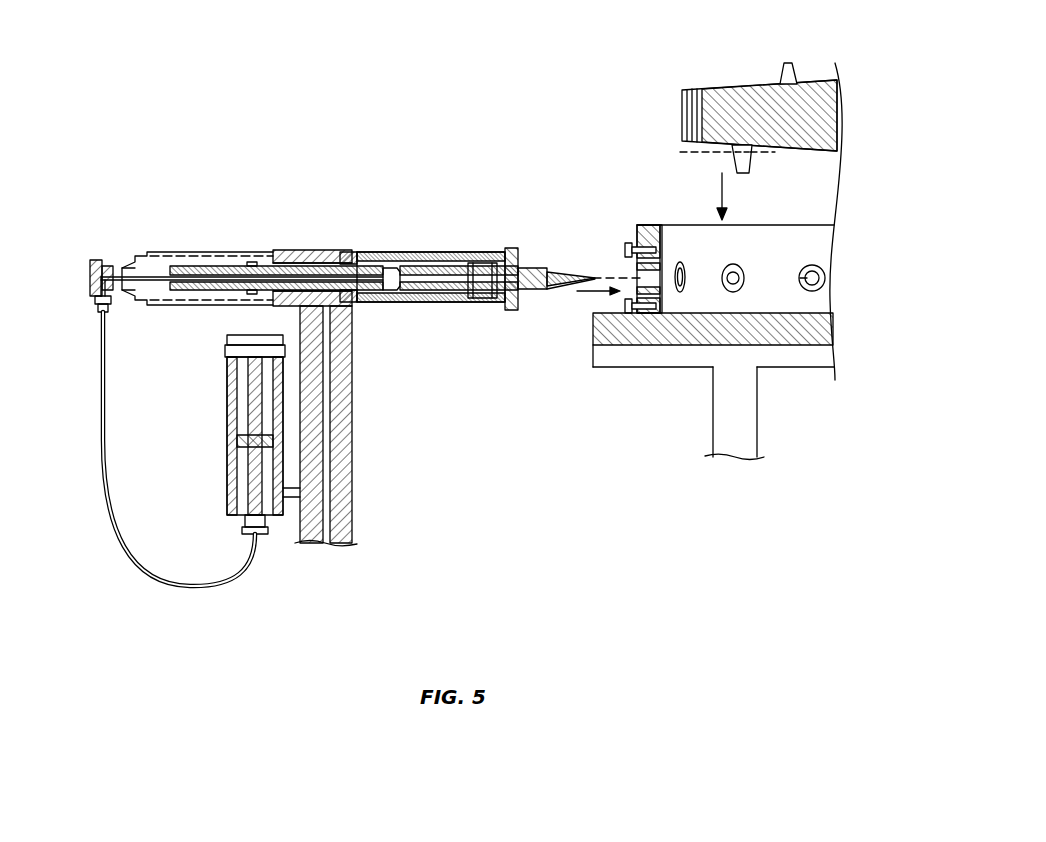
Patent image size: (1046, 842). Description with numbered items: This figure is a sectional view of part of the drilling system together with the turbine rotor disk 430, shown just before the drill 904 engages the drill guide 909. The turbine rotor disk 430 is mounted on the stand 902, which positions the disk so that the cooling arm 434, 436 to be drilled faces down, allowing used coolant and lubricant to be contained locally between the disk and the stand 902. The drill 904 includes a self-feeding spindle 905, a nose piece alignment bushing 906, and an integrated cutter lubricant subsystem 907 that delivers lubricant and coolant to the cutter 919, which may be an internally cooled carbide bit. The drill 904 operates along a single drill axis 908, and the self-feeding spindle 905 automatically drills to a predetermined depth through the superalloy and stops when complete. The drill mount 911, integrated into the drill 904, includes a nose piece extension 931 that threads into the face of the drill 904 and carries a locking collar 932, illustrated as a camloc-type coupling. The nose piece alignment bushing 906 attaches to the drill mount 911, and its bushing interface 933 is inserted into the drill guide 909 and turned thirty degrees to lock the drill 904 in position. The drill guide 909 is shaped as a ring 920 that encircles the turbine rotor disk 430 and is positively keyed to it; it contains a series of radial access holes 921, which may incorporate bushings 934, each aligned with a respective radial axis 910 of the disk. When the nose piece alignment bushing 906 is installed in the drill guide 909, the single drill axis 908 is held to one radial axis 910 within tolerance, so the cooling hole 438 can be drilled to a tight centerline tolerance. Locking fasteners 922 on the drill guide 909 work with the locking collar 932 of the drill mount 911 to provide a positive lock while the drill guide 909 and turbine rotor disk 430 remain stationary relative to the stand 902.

The stand 902 is at (660, 406).
The drill 904 is at (230, 194).
The self-feeding spindle 905 is at (207, 263).
The nose piece alignment bushing 906 is at (479, 292).
The integrated cutter lubricant subsystem 907 is at (158, 602).
The single drill axis 908 is at (629, 277).
The drill guide 909 is at (640, 190).
The radial axis 910 is at (703, 155).
The drill mount 911 is at (518, 223).
The cutter 919 is at (534, 288).
The ring 920 is at (688, 303).
The radial access hole 921 is at (800, 278).
The locking fastener 922 is at (633, 243).
The nose piece extension 931 is at (423, 252).
The locking collar 932 is at (513, 249).
The bushing interface 933 is at (526, 292).
The bushing 934 is at (733, 263).
The turbine rotor disk 430 is at (818, 78).
The cooling arm 434 is at (749, 168).
The cooling arm 436 is at (782, 77).
The cooling hole 438 is at (742, 148).